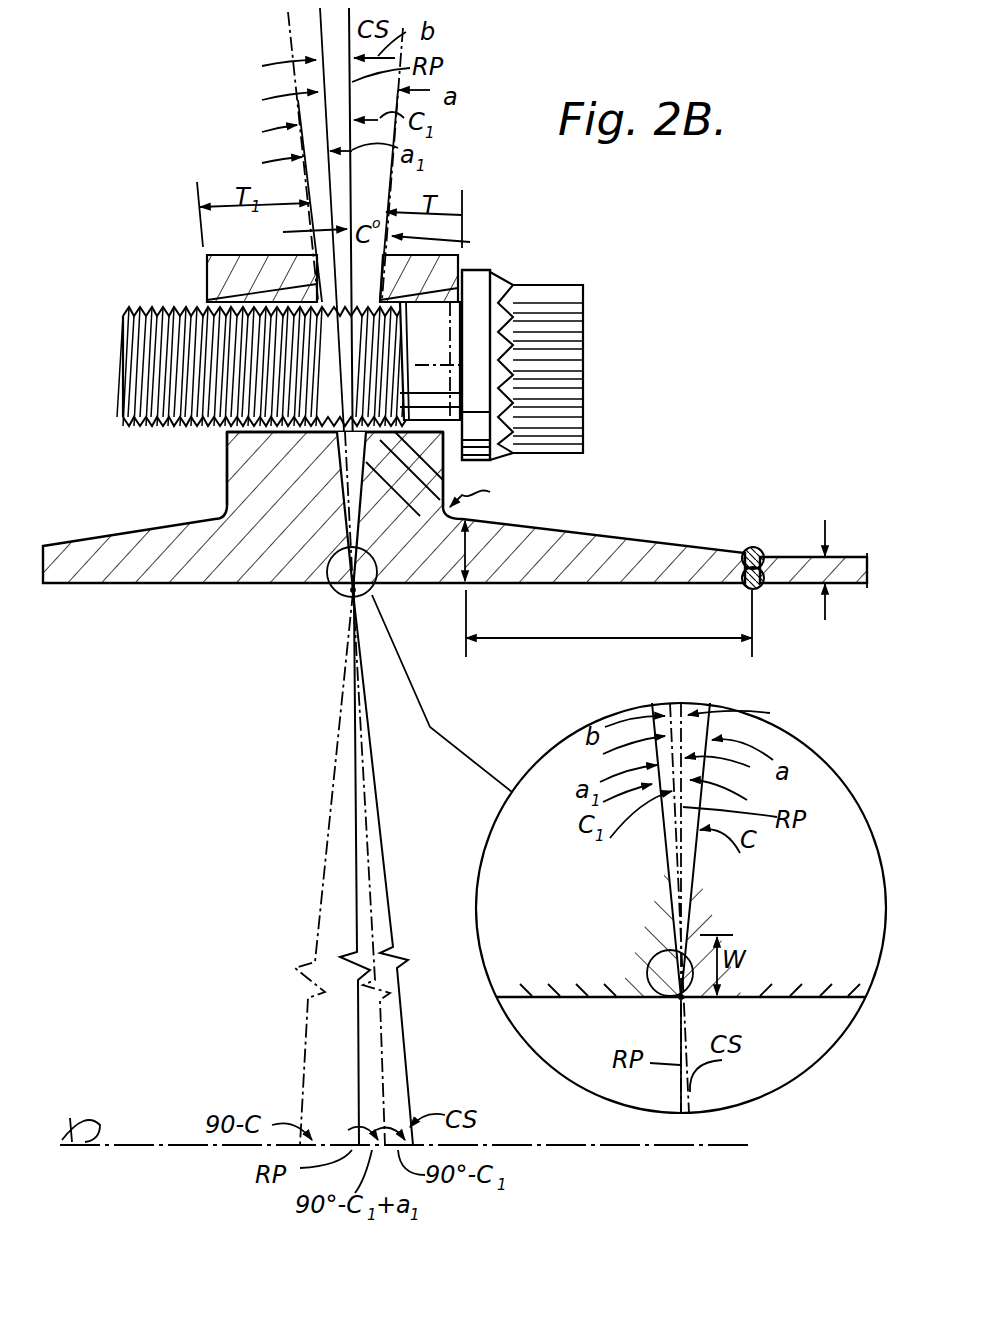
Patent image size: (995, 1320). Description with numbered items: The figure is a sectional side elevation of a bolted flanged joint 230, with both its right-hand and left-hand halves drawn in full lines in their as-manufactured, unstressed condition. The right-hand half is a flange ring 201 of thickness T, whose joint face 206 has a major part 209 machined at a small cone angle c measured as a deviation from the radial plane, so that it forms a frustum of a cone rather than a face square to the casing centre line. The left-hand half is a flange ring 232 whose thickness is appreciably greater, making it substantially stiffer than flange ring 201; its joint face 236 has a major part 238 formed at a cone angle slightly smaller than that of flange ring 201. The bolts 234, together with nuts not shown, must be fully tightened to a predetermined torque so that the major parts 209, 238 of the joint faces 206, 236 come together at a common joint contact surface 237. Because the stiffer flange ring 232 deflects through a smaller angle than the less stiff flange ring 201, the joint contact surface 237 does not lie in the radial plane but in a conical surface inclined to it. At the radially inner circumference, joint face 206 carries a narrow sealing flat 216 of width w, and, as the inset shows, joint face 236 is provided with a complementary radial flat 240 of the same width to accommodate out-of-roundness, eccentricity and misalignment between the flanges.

The flange ring 201 is at (461, 255).
The joint face 206 is at (443, 574).
The major part of joint face 209 is at (379, 578).
The sealing flat 216 is at (350, 621).
The bolted flanged joint 230 is at (170, 212).
The flange ring 232 is at (215, 271).
The bolts 234 is at (585, 338).
The joint face 236 is at (336, 458).
The joint contact surface 237 is at (212, 296).
The major part of joint face 238 is at (373, 468).
The radial flat 240 is at (311, 588).